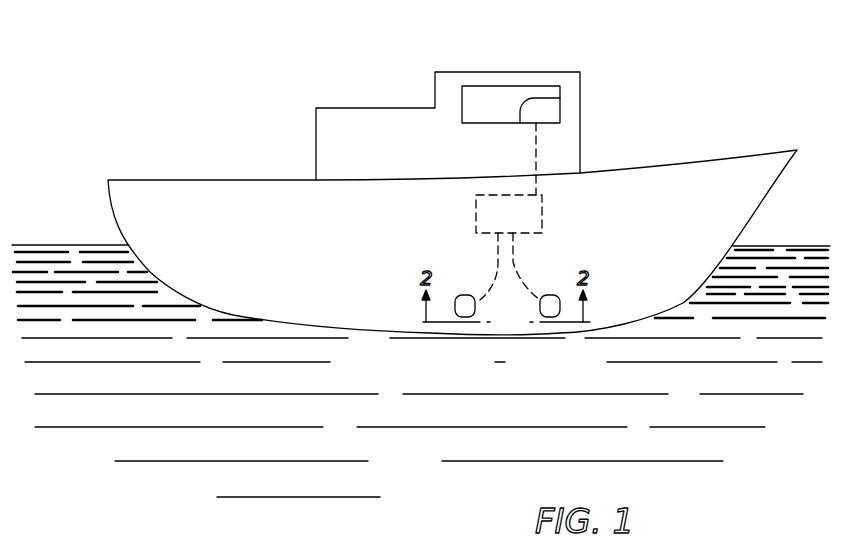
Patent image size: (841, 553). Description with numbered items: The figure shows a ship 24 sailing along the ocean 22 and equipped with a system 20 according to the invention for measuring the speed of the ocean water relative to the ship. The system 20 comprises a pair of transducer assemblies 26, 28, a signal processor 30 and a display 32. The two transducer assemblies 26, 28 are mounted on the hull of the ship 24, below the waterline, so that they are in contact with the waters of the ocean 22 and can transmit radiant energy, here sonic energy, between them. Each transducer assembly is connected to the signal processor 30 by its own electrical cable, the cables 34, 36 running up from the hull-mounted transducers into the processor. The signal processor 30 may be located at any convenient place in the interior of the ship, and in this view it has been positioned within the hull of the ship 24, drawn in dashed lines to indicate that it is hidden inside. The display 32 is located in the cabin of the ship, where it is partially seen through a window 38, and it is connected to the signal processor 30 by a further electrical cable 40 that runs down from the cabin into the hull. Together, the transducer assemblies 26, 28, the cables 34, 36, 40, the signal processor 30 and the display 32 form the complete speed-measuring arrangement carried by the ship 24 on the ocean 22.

The system 20 is at (472, 203).
The ocean 22 is at (765, 246).
The ship 24 is at (210, 180).
The transducer assembly 26 is at (553, 313).
The transducer assembly 28 is at (465, 317).
The signal processor 30 is at (544, 214).
The display 32 is at (543, 110).
The electrical cable 34 is at (517, 267).
The electrical cable 36 is at (497, 265).
The window 38 is at (520, 86).
The electrical cable 40 is at (537, 167).